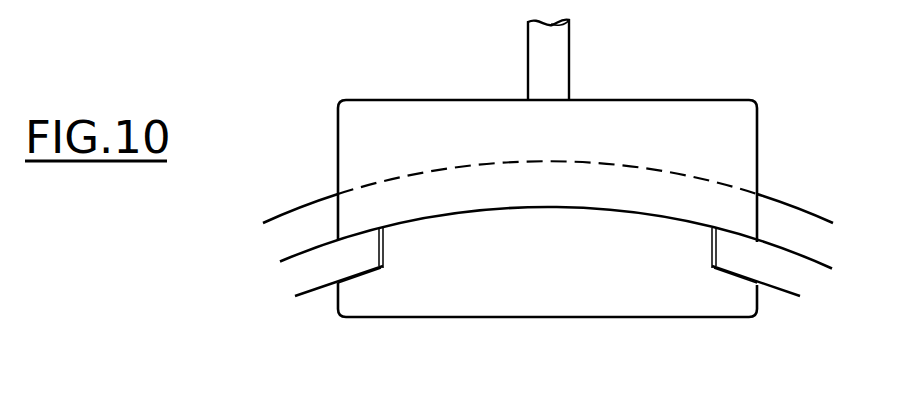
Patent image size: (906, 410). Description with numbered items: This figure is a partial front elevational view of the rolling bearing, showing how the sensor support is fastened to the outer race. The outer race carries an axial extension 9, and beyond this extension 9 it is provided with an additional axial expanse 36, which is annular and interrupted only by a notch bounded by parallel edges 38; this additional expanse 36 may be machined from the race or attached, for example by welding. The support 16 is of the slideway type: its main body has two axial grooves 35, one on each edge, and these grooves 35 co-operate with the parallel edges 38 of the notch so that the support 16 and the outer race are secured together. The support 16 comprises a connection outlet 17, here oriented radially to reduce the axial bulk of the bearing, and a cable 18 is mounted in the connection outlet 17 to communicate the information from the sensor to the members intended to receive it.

The axial extension 9 is at (780, 232).
The support 16 is at (338, 121).
The connection outlet 17 is at (385, 143).
The cable 18 is at (545, 58).
The axial grooves 35 is at (383, 269).
The additional axial expanse 36 is at (309, 270).
The parallel edges 38 is at (383, 243).